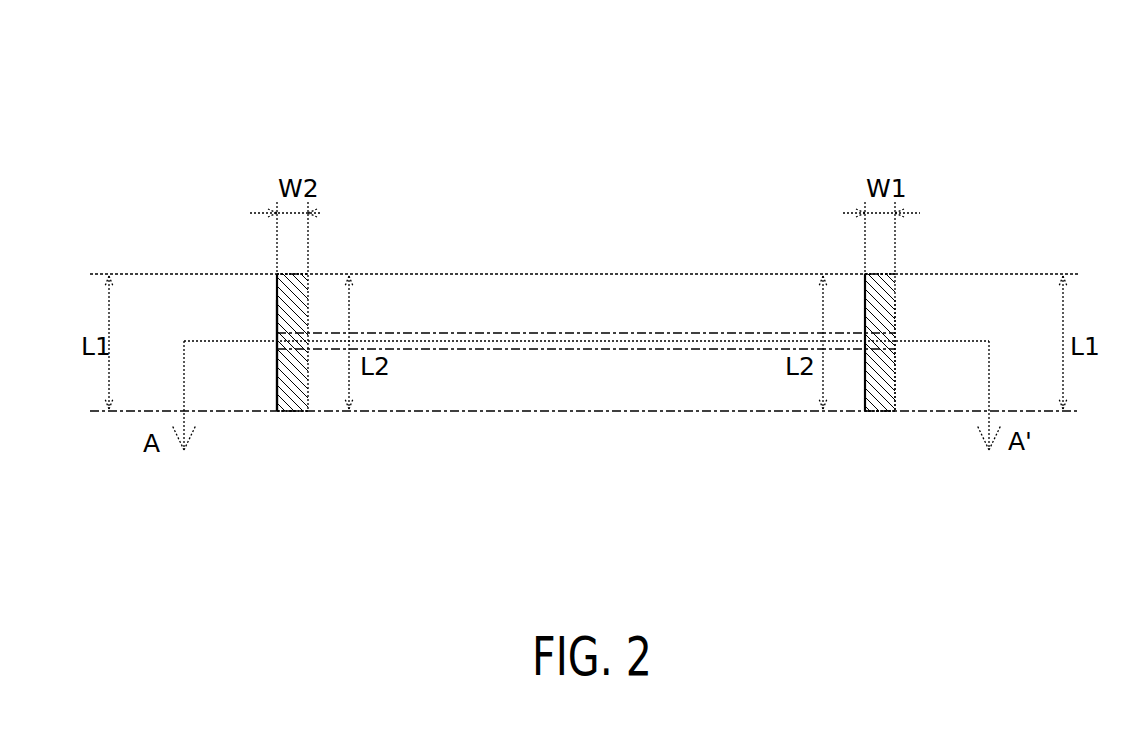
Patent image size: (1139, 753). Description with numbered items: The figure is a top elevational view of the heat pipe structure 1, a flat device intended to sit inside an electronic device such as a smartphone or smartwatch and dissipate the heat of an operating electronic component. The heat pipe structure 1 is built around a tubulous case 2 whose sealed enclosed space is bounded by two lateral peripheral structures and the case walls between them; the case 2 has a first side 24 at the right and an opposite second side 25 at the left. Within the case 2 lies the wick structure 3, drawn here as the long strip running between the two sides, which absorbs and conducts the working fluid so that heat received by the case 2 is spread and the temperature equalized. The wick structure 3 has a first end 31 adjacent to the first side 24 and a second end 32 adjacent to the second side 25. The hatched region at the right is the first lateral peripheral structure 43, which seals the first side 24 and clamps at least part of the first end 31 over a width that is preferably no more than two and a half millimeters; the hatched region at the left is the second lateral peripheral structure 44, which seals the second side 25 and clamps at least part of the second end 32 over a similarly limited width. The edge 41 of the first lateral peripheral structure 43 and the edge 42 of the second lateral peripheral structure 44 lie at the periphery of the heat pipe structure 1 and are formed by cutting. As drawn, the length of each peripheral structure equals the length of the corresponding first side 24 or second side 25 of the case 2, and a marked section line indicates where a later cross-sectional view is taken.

The heat pipe structure 1 is at (1090, 80).
The case 2 is at (560, 258).
The wick structure 3 is at (612, 350).
The first side 24 is at (903, 308).
The second side 25 is at (270, 306).
The first end 31 is at (895, 349).
The second end 32 is at (278, 349).
The edge 41 is at (896, 404).
The edge 42 is at (277, 404).
The first lateral peripheral structure 43 is at (875, 279).
The second lateral peripheral structure 44 is at (297, 279).